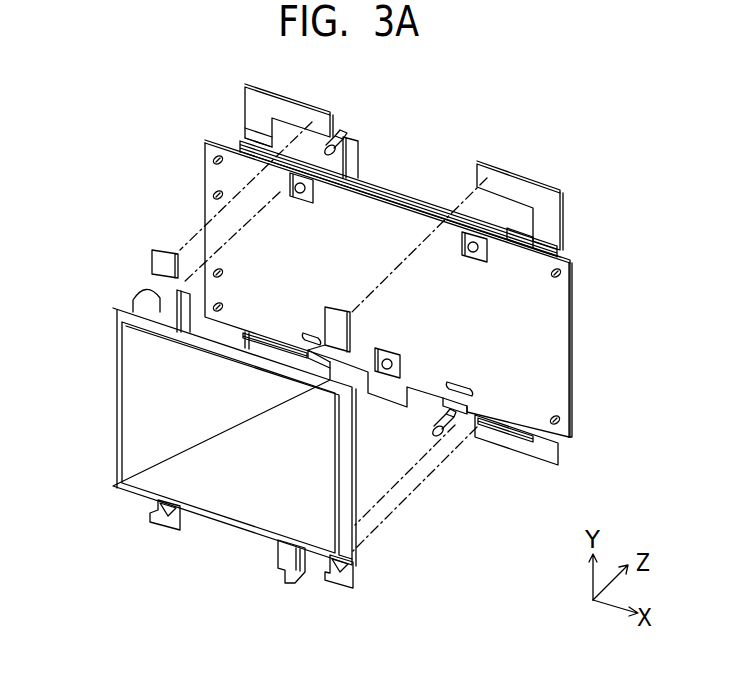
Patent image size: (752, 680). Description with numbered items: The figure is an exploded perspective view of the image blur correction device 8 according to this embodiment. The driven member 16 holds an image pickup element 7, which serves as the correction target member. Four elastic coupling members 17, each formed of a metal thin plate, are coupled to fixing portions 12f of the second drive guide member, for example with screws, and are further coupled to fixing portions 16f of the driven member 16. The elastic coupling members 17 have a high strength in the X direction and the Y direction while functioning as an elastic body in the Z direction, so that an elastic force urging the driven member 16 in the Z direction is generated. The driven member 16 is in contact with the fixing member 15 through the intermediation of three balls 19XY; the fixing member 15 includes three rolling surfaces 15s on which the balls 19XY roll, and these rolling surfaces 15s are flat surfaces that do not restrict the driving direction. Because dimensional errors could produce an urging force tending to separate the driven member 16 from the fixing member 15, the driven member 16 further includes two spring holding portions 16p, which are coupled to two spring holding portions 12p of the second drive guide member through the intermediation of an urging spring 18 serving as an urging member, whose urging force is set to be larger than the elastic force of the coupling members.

The image blur correction device 8 is at (654, 66).
The image pickup element 7 is at (132, 377).
The fixing portions 12f is at (247, 133).
The spring holding portions 12p is at (348, 130).
The fixing member 15 is at (213, 220).
The rolling surfaces 15s is at (313, 199).
The driven member 16 is at (120, 320).
The fixing portions 16f is at (158, 253).
The spring holding portions 16p is at (153, 290).
The elastic coupling members 17 is at (252, 103).
The urging spring 18 is at (348, 137).
The balls 19XY is at (388, 363).